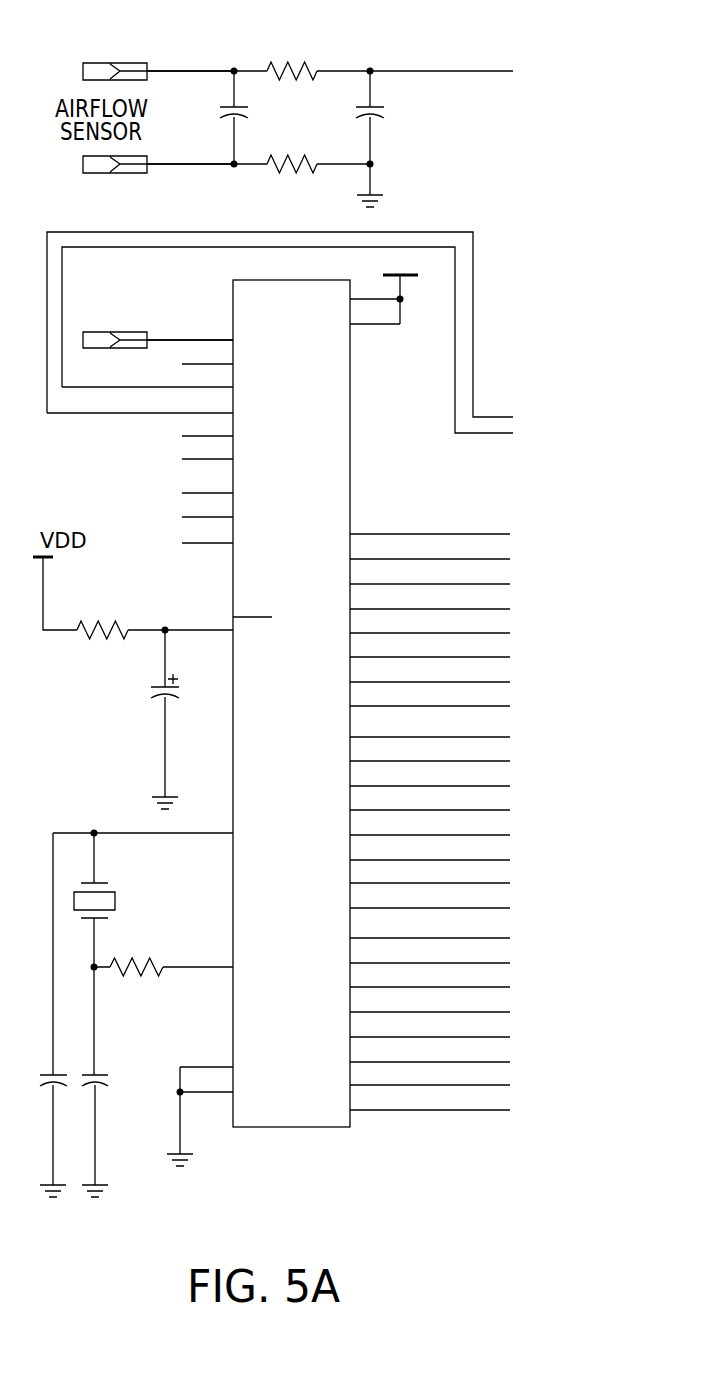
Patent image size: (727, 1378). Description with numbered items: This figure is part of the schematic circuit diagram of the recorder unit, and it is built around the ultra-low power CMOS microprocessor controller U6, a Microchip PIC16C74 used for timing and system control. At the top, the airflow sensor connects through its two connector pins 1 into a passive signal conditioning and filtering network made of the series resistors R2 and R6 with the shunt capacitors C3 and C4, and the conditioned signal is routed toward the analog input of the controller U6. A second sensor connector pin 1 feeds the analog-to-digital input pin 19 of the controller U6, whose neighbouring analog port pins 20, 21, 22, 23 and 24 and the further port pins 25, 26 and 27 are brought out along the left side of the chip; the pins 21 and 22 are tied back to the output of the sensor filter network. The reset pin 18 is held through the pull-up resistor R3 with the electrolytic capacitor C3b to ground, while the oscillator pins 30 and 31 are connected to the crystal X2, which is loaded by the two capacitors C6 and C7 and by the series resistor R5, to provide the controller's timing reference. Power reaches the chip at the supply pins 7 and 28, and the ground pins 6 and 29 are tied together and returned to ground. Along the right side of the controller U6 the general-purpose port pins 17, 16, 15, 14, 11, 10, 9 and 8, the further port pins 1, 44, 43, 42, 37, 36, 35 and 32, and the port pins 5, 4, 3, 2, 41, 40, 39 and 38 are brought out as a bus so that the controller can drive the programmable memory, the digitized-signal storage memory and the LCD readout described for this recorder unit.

The sensor connector pin 1 / RC7 pin 1 is at (190, 194).
The RA0/A10 pin 19 is at (230, 337).
The RA0/A11 pin 20 is at (248, 361).
The RA0/A12 pin 21 is at (188, 384).
The RA0/A13 pin 22 is at (180, 410).
The RA4/TOCK pin 23 is at (256, 433).
The RA5/AN4/SS pin 24 is at (262, 456).
The RE0/AN5 pin 25 is at (246, 489).
The RE1/AN6 pin 26 is at (245, 513).
The RE2/AN7 pin 27 is at (246, 539).
The MCLR pin 18 is at (230, 629).
The OSC1 pin 30 is at (194, 829).
The OSC2 pin 31 is at (228, 962).
The VSS pin 6 is at (228, 1064).
The VSS pin 29 is at (228, 1089).
The VDD pin 7 is at (375, 288).
The VDD pin 28 is at (375, 313).
The RB7 pin 17 is at (408, 531).
The RB6 pin 16 is at (408, 556).
The RB5 pin 15 is at (408, 581).
The RB4 pin 14 is at (408, 606).
The RB3 pin 11 is at (408, 630).
The RB2 pin 10 is at (408, 654).
The RB1 pin 9 is at (408, 679).
The RB0 pin 8 is at (408, 703).
The RC6 pin 44 is at (408, 758).
The RC5 pin 43 is at (408, 783).
The RC4 pin 42 is at (408, 807).
The RC3 pin 37 is at (408, 832).
The RC2 pin 36 is at (408, 857).
The RC1 pin 35 is at (408, 880).
The RC0 pin 32 is at (408, 905).
The RD7 pin 5 is at (407, 935).
The RD6 pin 4 is at (407, 960).
The RD5 pin 3 is at (407, 984).
The RD4 pin 2 is at (407, 1009).
The RD3 pin 41 is at (407, 1034).
The RD2 pin 40 is at (407, 1059).
The RD1 pin 39 is at (407, 1082).
The RD0 pin 38 is at (407, 1107).
The PIC16C74 microcontroller U6 is at (278, 686).
The 4.7M resistor R2 is at (302, 72).
The 4.7M resistor R6 is at (302, 167).
The 0.22 capacitor C3 is at (260, 117).
The 0.22 capacitor C4 is at (351, 139).
The 100K resistor R3 is at (121, 627).
The 2.2uF/6.3V capacitor C3b is at (104, 719).
The 3.6864 MHz crystal X2 is at (127, 954).
The 330K resistor R5 is at (133, 968).
The 15pF capacitor C6 is at (42, 1015).
The 15pF capacitor C7 is at (85, 1119).